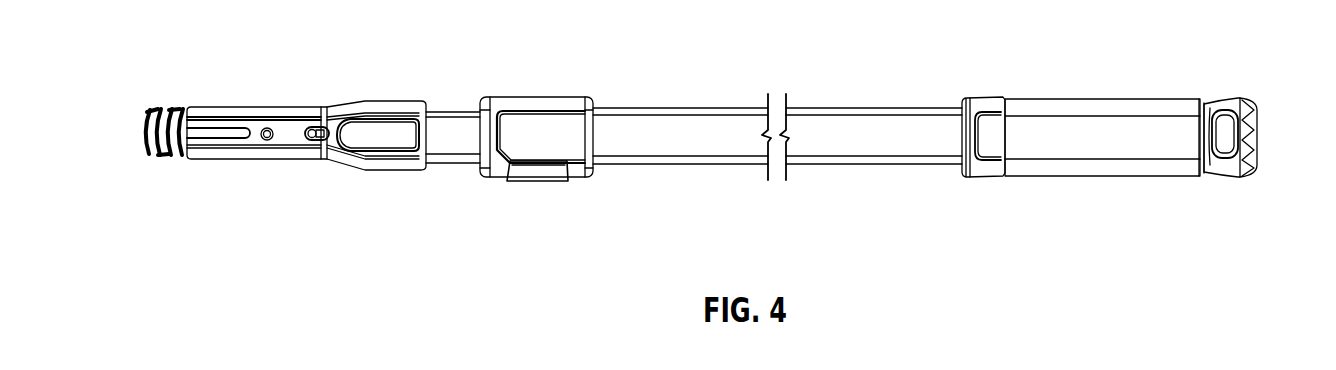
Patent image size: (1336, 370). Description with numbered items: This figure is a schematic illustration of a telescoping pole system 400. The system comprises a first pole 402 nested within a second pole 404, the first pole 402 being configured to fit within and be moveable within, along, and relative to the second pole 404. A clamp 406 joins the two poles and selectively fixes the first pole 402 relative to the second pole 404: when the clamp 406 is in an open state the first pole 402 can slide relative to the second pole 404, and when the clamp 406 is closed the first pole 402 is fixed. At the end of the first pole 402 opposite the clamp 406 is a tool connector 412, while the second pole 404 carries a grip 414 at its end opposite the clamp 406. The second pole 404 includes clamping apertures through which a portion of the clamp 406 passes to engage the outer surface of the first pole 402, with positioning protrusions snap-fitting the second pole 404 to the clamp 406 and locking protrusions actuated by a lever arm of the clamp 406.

The telescoping pole system 400 is at (1153, 62).
The first pole 402 is at (447, 158).
The second pole 404 is at (845, 167).
The clamp 406 is at (547, 95).
The tool connector 412 is at (268, 163).
The grip 414 is at (1088, 167).